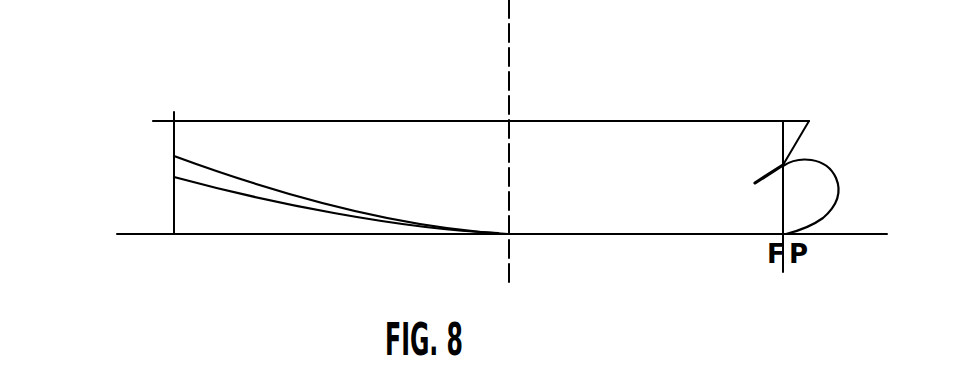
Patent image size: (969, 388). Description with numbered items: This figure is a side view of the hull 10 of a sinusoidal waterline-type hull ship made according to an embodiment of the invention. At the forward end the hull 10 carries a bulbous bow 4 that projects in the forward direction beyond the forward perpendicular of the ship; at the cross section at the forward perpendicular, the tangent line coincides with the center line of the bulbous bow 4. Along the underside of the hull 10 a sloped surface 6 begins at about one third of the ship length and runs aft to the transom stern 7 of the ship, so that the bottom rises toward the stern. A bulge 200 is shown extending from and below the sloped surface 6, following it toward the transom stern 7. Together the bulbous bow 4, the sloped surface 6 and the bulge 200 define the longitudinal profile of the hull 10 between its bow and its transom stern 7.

The hull 10 is at (630, 143).
The transom stern 7 is at (173, 140).
The sloped surface 6 is at (308, 200).
The bulge 200 is at (327, 213).
The bulbous bow 4 is at (808, 195).